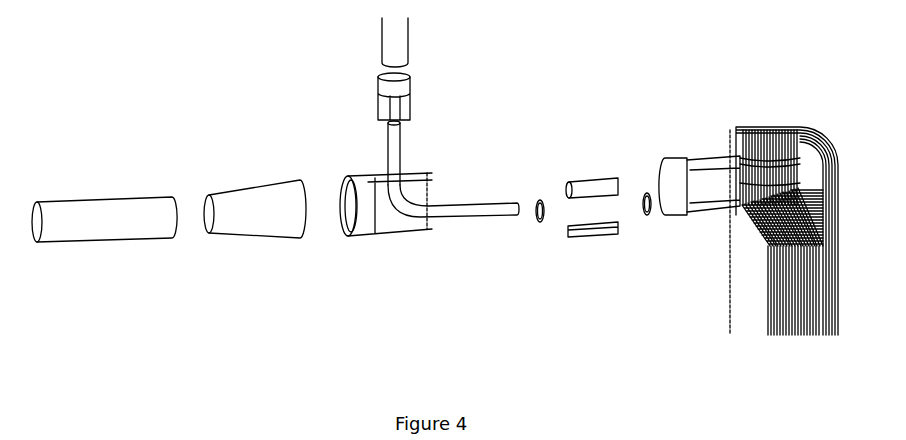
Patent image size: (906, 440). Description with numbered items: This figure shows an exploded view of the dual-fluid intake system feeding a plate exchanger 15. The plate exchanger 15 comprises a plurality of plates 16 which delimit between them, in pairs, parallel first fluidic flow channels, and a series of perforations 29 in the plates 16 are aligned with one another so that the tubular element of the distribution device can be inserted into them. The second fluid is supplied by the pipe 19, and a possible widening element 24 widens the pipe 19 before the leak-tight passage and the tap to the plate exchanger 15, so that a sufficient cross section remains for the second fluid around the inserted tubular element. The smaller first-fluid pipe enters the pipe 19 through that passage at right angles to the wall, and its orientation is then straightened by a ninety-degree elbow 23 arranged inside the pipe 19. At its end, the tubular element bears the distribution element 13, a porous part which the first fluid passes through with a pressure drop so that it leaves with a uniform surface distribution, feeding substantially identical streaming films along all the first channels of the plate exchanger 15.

The distribution element 13 is at (600, 233).
The plate exchanger 15 is at (740, 246).
The plates 16 is at (805, 320).
The pipe 19 is at (715, 163).
The elbow 23 is at (407, 205).
The widening element 24 is at (260, 202).
The perforations 29 is at (783, 182).